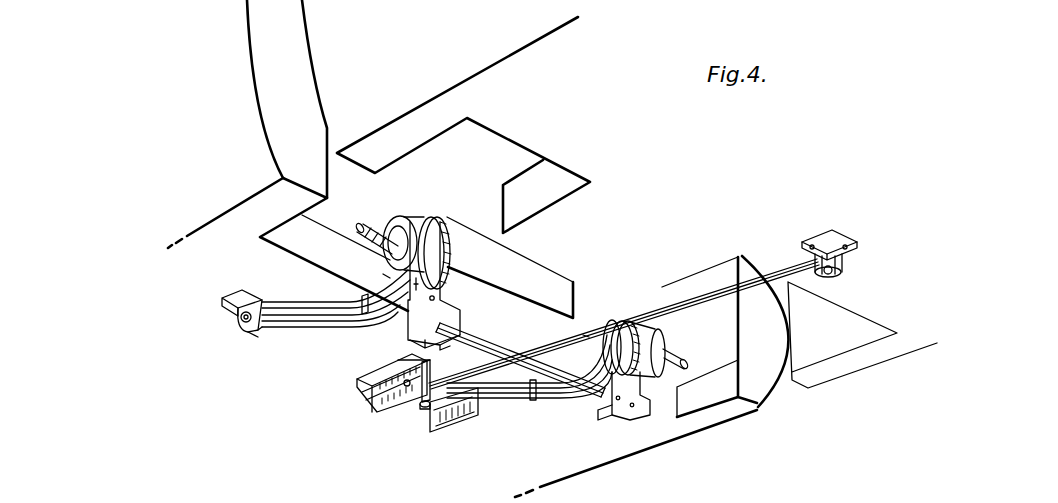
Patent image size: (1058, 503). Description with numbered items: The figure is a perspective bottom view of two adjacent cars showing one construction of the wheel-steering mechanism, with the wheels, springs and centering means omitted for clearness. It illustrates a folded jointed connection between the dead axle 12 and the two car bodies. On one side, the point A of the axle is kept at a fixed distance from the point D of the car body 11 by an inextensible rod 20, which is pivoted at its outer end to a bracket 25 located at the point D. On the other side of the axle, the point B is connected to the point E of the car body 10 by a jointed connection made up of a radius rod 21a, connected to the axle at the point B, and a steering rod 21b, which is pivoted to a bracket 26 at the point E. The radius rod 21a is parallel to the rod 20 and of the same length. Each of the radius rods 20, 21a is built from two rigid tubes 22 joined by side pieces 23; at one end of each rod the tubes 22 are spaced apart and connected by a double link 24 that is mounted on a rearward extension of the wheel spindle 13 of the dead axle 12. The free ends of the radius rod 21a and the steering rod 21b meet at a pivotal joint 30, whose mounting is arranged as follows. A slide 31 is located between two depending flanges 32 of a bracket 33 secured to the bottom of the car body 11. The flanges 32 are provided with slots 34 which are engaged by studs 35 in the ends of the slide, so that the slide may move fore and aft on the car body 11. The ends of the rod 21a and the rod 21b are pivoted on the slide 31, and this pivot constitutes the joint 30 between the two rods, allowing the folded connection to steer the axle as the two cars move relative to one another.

The car body 10 is at (552, 257).
The car body 11 is at (277, 99).
The dead axle 12 is at (490, 337).
The wheel spindle 13 is at (380, 224).
The inextensible rod 20 is at (330, 328).
The radius rod 21a is at (547, 407).
The steering rod 21b is at (693, 293).
The rigid tube 22 is at (383, 276).
The side piece 23 is at (347, 308).
The double link 24 is at (452, 232).
The bracket 25 is at (250, 302).
The bracket 26 is at (857, 242).
The pivotal joint 30 is at (408, 418).
The slide 31 is at (437, 408).
The depending flange 32 is at (377, 415).
The bracket 33 is at (402, 363).
The slot 34 is at (372, 400).
The stud 35 is at (430, 367).
The point A is at (457, 255).
The point B is at (643, 338).
The point D is at (242, 341).
The point E is at (846, 226).